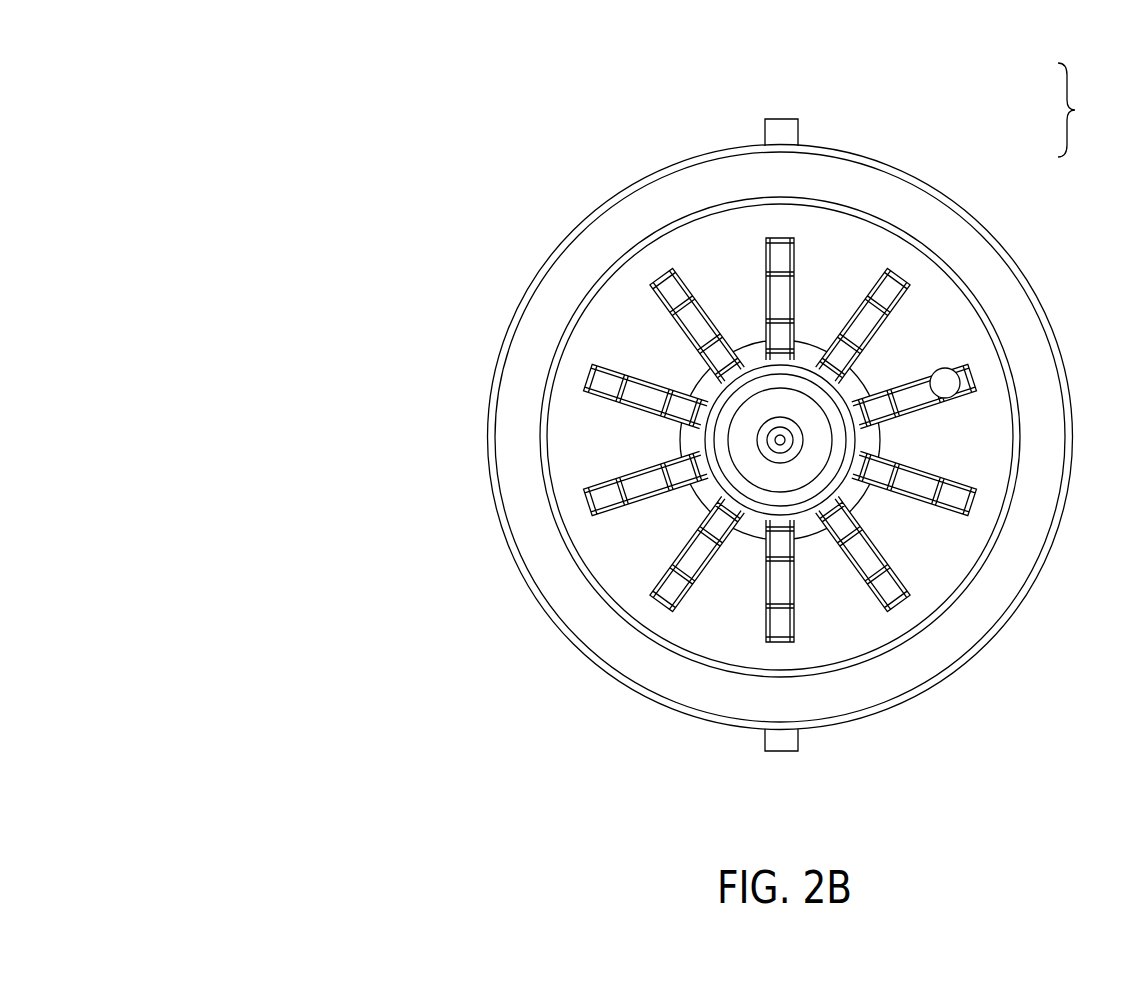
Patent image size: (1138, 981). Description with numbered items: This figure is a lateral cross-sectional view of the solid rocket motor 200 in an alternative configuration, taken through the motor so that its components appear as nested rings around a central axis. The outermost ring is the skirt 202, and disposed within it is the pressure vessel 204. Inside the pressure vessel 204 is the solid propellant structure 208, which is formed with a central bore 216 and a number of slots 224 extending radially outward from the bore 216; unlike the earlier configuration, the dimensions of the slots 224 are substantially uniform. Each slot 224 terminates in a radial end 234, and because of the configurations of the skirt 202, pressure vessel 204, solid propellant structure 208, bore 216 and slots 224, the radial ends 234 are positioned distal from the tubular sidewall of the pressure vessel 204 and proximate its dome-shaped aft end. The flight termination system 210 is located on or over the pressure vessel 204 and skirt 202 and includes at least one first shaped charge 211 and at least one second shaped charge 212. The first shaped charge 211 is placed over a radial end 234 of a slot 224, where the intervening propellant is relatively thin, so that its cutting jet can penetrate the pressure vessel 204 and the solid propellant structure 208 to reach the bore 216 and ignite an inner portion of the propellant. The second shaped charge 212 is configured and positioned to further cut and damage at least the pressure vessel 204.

The solid rocket motor 200 is at (320, 106).
The skirt 202 is at (524, 250).
The pressure vessel 204 is at (545, 405).
The solid propellant structure 208 is at (958, 430).
The flight termination system 210 is at (1087, 110).
The first shaped charge 211 is at (950, 355).
The second shaped charge 212 is at (804, 111).
The bore 216 is at (780, 453).
The slots 224 is at (680, 572).
The radial ends 234 is at (590, 503).